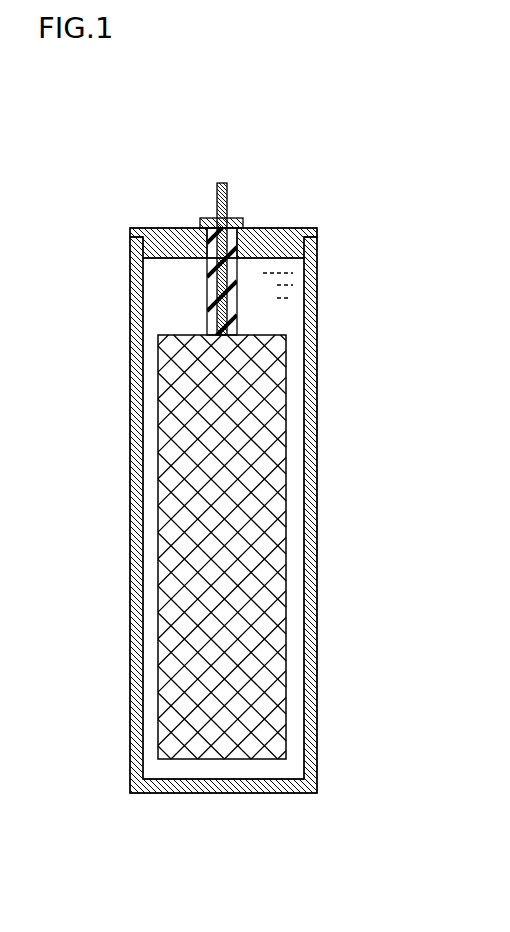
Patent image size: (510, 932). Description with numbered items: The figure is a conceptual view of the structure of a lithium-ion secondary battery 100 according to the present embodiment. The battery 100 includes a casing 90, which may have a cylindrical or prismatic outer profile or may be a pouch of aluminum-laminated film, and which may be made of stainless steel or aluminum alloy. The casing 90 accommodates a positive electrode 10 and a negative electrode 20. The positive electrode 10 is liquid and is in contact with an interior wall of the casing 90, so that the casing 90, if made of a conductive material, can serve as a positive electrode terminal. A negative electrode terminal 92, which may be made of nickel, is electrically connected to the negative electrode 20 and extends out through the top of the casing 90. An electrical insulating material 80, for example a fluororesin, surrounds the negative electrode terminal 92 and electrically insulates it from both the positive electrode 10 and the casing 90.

The battery 100 is at (123, 111).
The positive electrode 10 is at (164, 312).
The negative electrode 20 is at (226, 553).
The electrical insulating material 80 is at (238, 218).
The casing 90 is at (318, 316).
The negative electrode terminal 92 is at (220, 183).